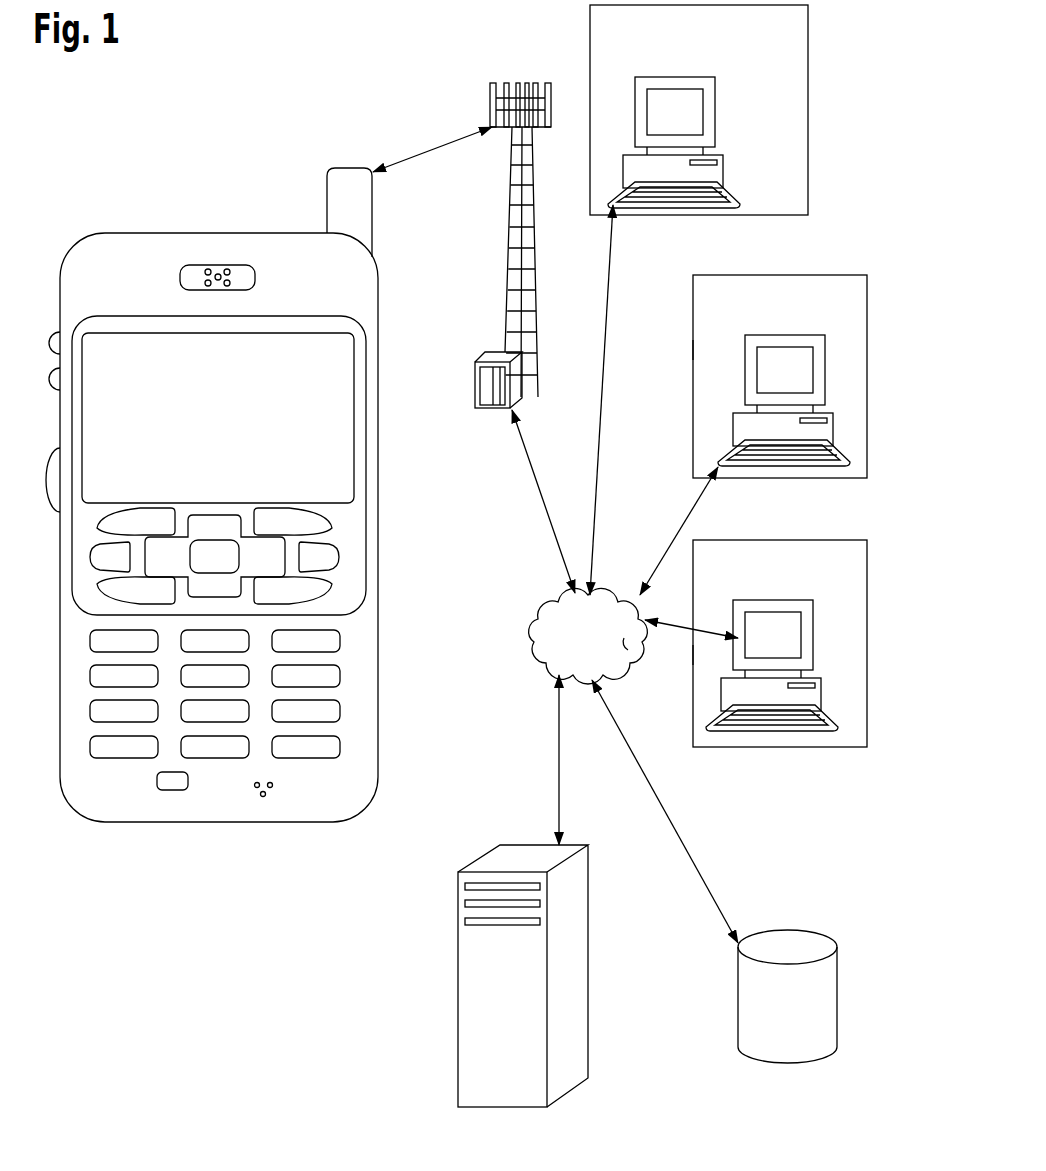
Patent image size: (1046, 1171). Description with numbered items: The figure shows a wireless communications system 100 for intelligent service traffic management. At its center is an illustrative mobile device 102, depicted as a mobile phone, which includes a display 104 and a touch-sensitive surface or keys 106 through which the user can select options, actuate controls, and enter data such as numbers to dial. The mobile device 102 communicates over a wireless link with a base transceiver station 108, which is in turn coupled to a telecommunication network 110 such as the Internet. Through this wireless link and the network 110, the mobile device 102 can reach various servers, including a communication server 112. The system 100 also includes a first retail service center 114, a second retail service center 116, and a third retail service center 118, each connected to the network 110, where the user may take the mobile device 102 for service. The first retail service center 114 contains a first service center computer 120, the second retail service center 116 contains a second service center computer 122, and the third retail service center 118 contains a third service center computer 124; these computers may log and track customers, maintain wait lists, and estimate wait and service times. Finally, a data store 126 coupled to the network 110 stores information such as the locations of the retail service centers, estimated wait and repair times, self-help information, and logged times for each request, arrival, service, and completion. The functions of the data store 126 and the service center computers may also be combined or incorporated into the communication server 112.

The wireless communications system 100 is at (412, 96).
The mobile device 102 is at (148, 822).
The display 104 is at (348, 380).
The keys 106 is at (390, 503).
The base transceiver station 108 is at (476, 409).
The telecommunication network 110 is at (552, 675).
The communication server 112 is at (592, 1075).
The first retail service center 114 is at (590, 45).
The second retail service center 116 is at (692, 347).
The third retail service center 118 is at (692, 653).
The first service center computer 120 is at (720, 208).
The second service center computer 122 is at (789, 452).
The third service center computer 124 is at (790, 718).
The data store 126 is at (807, 1058).